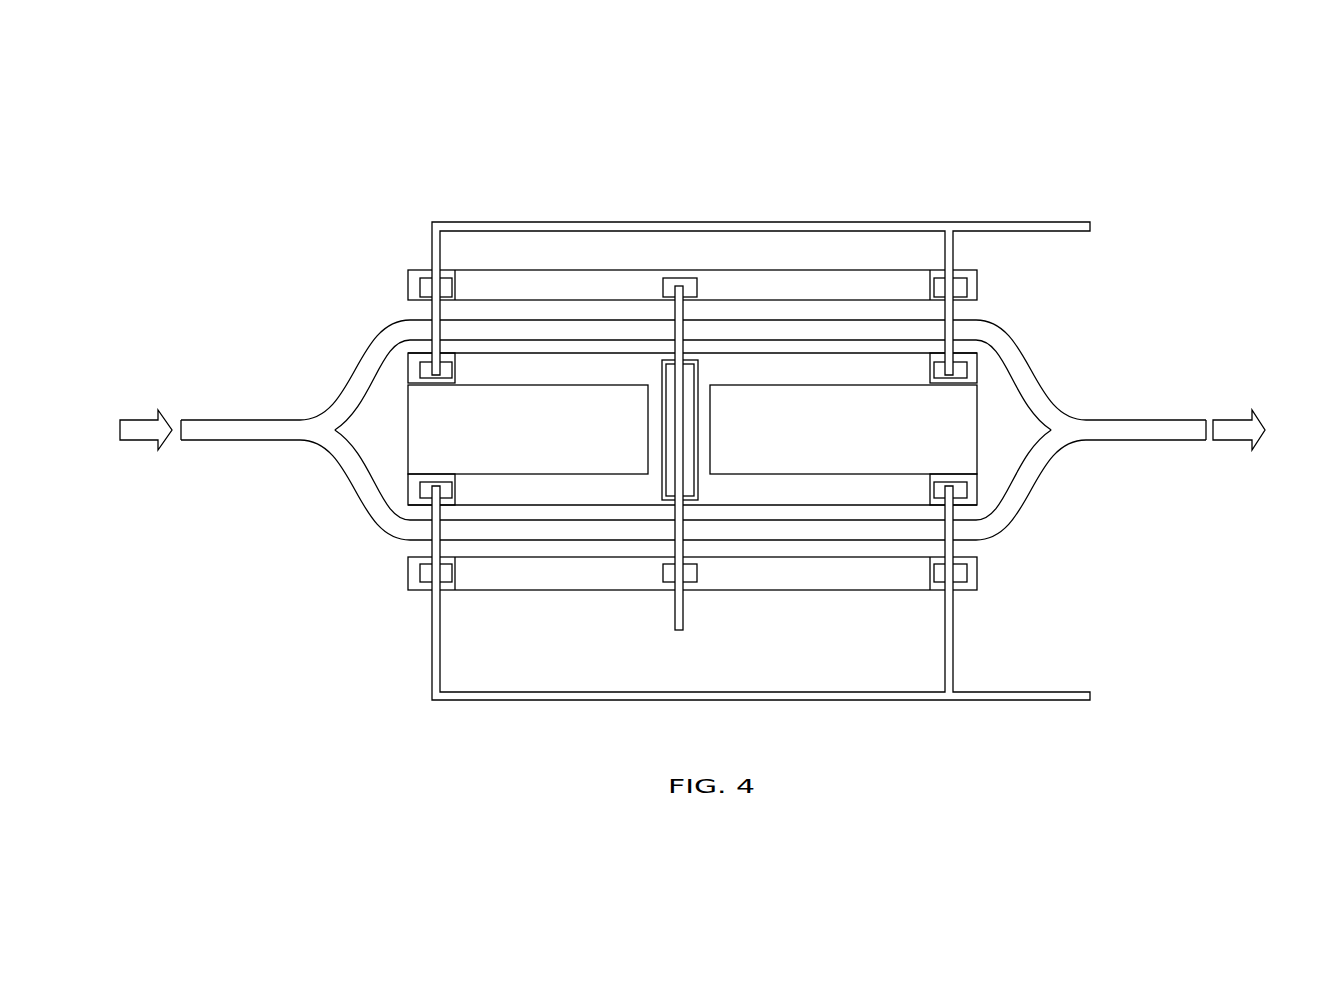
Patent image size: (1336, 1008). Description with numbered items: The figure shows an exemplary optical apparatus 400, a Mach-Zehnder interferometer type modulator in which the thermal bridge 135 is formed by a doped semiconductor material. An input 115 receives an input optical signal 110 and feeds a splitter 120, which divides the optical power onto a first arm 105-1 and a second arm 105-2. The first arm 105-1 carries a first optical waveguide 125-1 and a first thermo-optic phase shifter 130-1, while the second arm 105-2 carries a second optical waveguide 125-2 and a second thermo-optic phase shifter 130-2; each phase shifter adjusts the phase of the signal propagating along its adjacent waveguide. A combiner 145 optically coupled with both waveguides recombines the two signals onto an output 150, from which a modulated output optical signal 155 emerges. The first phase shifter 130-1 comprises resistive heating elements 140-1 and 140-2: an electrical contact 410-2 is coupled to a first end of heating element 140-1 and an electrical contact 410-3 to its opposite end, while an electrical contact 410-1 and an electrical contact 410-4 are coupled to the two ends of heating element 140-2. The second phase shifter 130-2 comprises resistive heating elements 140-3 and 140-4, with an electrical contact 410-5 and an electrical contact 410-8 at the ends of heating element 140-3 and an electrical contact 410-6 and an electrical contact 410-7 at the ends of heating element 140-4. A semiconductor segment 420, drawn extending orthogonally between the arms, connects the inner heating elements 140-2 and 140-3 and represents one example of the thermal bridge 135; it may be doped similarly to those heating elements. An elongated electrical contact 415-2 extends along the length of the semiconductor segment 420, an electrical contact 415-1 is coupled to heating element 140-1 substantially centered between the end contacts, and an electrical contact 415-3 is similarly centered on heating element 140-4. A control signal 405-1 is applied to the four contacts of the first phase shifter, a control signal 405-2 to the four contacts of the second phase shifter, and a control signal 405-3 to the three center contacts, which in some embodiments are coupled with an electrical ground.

The optical apparatus 400 is at (692, 421).
The first arm 105-1 is at (635, 259).
The second arm 105-2 is at (614, 592).
The input optical signal 110 is at (132, 443).
The input 115 is at (228, 442).
The splitter 120 is at (330, 456).
The first optical waveguide 125-1 is at (822, 330).
The second optical waveguide 125-2 is at (540, 530).
The first thermo-optic phase shifter 130-1 is at (807, 276).
The second thermo-optic phase shifter 130-2 is at (780, 623).
The thermal bridge 135 is at (722, 418).
The resistive heating element 140-1 is at (710, 239).
The resistive heating element 140-2 is at (528, 429).
The resistive heating element 140-3 is at (545, 480).
The resistive heating element 140-4 is at (683, 611).
The combiner 145 is at (1055, 455).
The output 150 is at (1108, 425).
The output optical signal 155 is at (1233, 443).
The control signal 405-1 is at (1088, 222).
The control signal 405-2 is at (1068, 700).
The control signal 405-3 is at (746, 476).
The electrical contact 410-1 is at (428, 378).
The electrical contact 410-2 is at (425, 288).
The electrical contact 410-3 is at (962, 288).
The electrical contact 410-4 is at (940, 378).
The electrical contact 410-5 is at (446, 484).
The electrical contact 410-6 is at (423, 570).
The electrical contact 410-7 is at (960, 573).
The electrical contact 410-8 is at (942, 483).
The electrical contact 415-1 is at (690, 280).
The electrical contact 415-2 is at (690, 450).
The electrical contact 415-3 is at (690, 572).
The semiconductor segment 420 is at (655, 428).